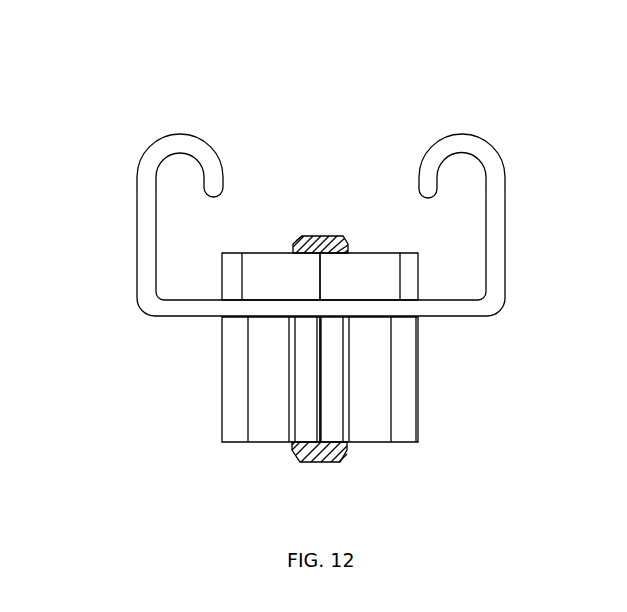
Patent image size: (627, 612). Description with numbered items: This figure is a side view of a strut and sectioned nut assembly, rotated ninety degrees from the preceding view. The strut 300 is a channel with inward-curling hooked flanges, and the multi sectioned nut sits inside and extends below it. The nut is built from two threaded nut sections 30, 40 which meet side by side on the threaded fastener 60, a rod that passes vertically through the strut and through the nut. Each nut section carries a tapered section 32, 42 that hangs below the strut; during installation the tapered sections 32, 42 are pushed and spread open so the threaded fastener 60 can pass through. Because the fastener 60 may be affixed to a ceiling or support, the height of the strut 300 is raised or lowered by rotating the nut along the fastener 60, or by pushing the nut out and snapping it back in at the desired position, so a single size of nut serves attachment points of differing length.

The strut 300 is at (487, 160).
The threaded nut section 30 is at (368, 278).
The tapered section 32 is at (368, 393).
The threaded nut section 40 is at (263, 275).
The tapered section 42 is at (265, 408).
The threaded fastener 60 is at (302, 236).